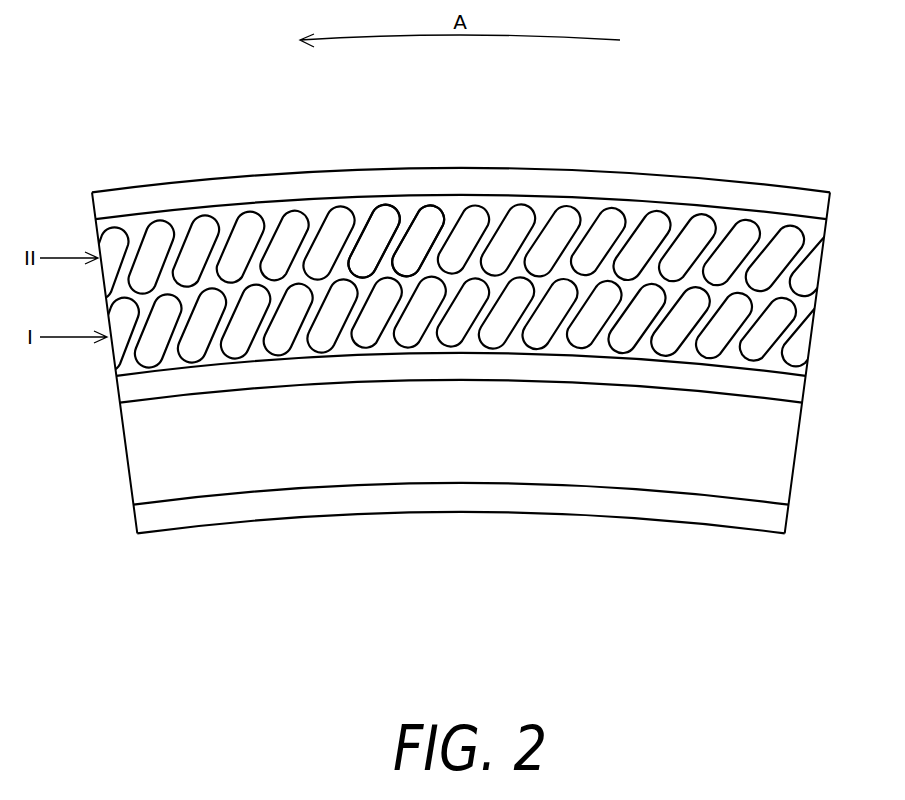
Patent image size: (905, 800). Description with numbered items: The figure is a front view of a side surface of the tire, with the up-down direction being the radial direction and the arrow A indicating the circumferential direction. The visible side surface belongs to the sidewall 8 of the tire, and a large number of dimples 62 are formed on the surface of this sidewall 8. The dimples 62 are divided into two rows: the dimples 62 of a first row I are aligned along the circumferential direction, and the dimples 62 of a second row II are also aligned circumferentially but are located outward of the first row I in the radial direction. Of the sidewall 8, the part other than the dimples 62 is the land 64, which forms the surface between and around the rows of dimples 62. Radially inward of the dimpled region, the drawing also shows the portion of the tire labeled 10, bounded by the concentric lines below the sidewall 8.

The sidewall 8 is at (772, 225).
The rotor 10 is at (672, 432).
The dimple 62 is at (252, 232).
The land 64 is at (429, 242).